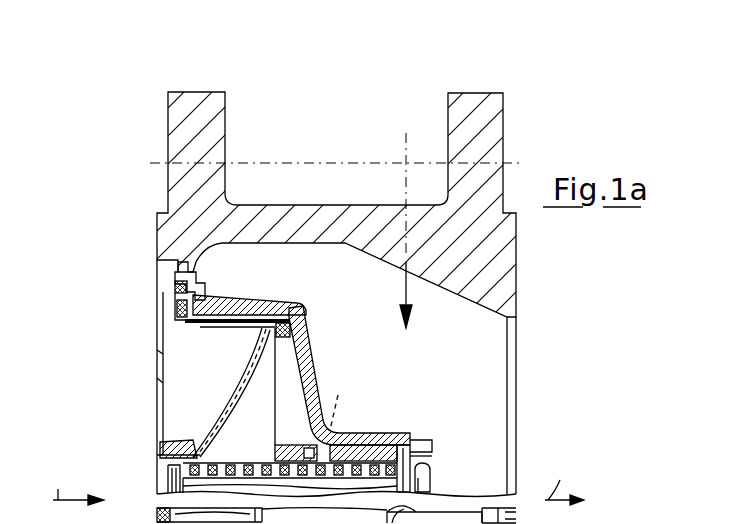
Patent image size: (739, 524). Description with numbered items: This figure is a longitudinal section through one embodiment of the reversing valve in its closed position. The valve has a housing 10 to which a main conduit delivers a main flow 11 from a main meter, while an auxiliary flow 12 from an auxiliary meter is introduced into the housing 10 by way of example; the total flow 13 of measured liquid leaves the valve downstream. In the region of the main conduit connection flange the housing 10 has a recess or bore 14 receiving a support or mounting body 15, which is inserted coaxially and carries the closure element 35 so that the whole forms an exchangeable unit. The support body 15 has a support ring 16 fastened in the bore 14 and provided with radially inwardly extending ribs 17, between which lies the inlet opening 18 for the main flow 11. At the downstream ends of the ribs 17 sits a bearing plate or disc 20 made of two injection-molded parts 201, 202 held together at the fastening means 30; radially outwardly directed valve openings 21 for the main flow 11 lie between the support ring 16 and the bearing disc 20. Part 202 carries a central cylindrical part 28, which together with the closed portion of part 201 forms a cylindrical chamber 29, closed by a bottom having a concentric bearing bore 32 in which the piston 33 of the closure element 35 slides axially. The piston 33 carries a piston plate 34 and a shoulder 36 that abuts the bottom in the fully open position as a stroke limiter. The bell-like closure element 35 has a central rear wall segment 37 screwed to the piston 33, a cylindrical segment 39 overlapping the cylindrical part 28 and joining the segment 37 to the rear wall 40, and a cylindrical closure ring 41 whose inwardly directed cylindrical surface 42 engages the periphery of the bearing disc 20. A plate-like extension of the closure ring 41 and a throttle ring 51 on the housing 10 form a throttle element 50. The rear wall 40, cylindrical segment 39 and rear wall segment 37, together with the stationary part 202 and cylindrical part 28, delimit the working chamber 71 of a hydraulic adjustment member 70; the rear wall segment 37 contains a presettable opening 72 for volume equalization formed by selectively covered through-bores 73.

The housing 10 is at (301, 215).
The main flow 11 is at (76, 484).
The auxiliary flow 12 is at (409, 290).
The total flow 13 is at (564, 484).
The recess or bore 14 is at (178, 266).
The support or mounting body 15 is at (177, 448).
The support ring 16 is at (174, 292).
The ribs 17 is at (162, 383).
The inlet opening 18 is at (162, 356).
The bearing plate or disc 20 is at (231, 392).
The valve openings 21 is at (183, 324).
The central cylindrical part 28 is at (370, 446).
The cylindrical chamber 29 is at (185, 450).
The fastening means 30 is at (296, 394).
The bearing bore 32 is at (158, 522).
The piston 33 is at (238, 487).
The piston plate 34 is at (168, 476).
The closure element 35 is at (313, 312).
The shoulder 36 is at (392, 450).
The central rear wall segment 37 is at (430, 478).
The cylindrical segment 39 is at (352, 436).
The rear wall 40 is at (328, 380).
The closure ring 41 is at (281, 306).
The inwardly directed cylindrical surface 42 is at (240, 326).
The throttle element 50 is at (255, 266).
The throttle ring 51 is at (220, 266).
The hydraulic adjustment member 70 is at (319, 347).
The working chamber 71 is at (296, 330).
The presettable opening 72 is at (421, 458).
The through-bores 73 is at (412, 441).
The bearing disc part 201 is at (236, 413).
The bearing disc part 202 is at (331, 397).